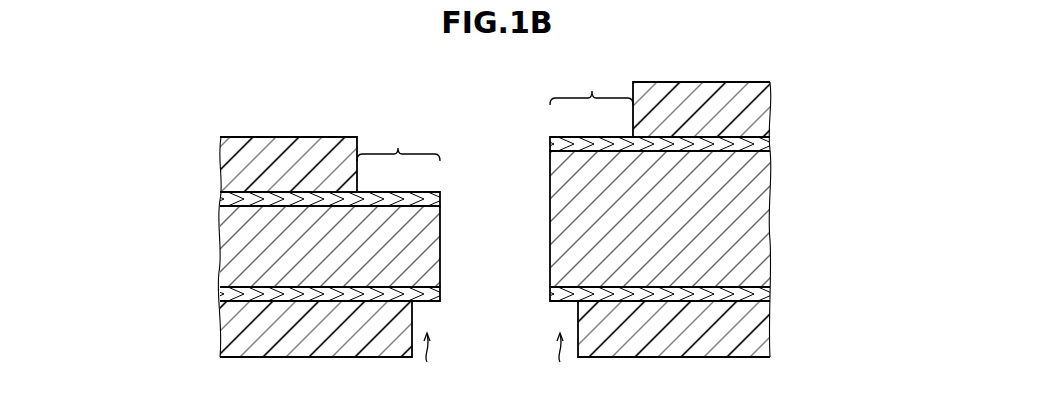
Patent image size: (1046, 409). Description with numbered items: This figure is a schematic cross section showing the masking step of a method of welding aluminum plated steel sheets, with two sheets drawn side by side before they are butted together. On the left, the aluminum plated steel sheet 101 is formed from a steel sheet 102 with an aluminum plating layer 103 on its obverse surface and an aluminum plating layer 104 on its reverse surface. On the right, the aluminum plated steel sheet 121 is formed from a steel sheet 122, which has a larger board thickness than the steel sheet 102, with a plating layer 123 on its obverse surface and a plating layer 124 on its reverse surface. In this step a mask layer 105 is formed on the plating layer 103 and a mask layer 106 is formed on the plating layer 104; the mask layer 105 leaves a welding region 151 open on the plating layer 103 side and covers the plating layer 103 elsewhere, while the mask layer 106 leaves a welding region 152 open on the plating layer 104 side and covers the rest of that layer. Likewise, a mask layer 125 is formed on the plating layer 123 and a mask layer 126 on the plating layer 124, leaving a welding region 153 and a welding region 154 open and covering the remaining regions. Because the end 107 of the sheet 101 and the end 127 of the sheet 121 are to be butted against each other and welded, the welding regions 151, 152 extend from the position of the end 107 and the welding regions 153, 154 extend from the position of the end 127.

The aluminum plated steel sheet 101 is at (150, 247).
The steel sheet 102 is at (220, 247).
The plating layer 103 is at (220, 199).
The plating layer 104 is at (220, 294).
The mask layer 105 is at (220, 164).
The mask layer 106 is at (220, 330).
The end 107 is at (440, 247).
The aluminum plated steel sheet 121 is at (852, 224).
The steel sheet 122 is at (770, 223).
The plating layer 123 is at (770, 145).
The plating layer 124 is at (770, 295).
The mask layer 125 is at (770, 110).
The mask layer 126 is at (770, 329).
The end 127 is at (550, 218).
The welding region 151 is at (398, 140).
The welding region 152 is at (428, 362).
The welding region 153 is at (591, 84).
The welding region 154 is at (561, 362).